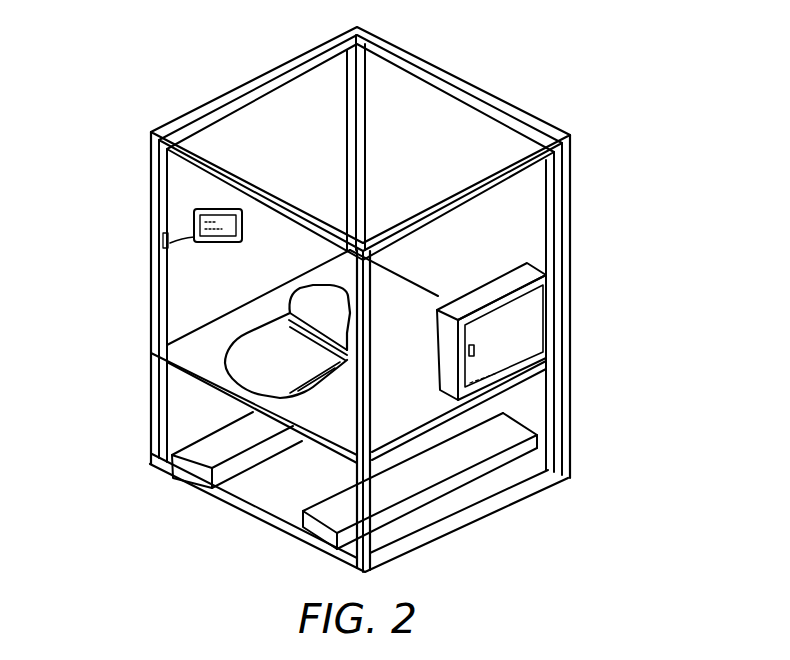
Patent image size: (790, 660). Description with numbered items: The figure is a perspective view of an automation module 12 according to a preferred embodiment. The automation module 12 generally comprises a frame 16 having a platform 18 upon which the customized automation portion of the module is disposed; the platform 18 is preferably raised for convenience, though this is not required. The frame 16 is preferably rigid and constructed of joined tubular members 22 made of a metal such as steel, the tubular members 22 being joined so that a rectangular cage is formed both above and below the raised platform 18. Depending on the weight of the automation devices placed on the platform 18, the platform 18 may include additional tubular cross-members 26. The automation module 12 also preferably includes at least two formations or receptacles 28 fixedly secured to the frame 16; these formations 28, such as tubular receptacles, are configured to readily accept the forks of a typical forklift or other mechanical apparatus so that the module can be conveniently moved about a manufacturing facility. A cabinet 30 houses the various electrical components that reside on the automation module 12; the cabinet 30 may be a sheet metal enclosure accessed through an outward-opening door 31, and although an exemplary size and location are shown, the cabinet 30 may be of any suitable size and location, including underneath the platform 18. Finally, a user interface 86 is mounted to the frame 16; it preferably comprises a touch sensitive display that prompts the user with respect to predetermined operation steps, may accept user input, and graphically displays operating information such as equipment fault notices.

The automation module 12 is at (150, 117).
The frame 16 is at (148, 279).
The platform 18 is at (265, 323).
The tubular members 22 is at (150, 432).
The tubular cross-members 26 is at (307, 338).
The formations or receptacles 28 is at (208, 458).
The cabinet 30 is at (537, 318).
The outward-opening door 31 is at (478, 366).
The user interface 86 is at (210, 210).